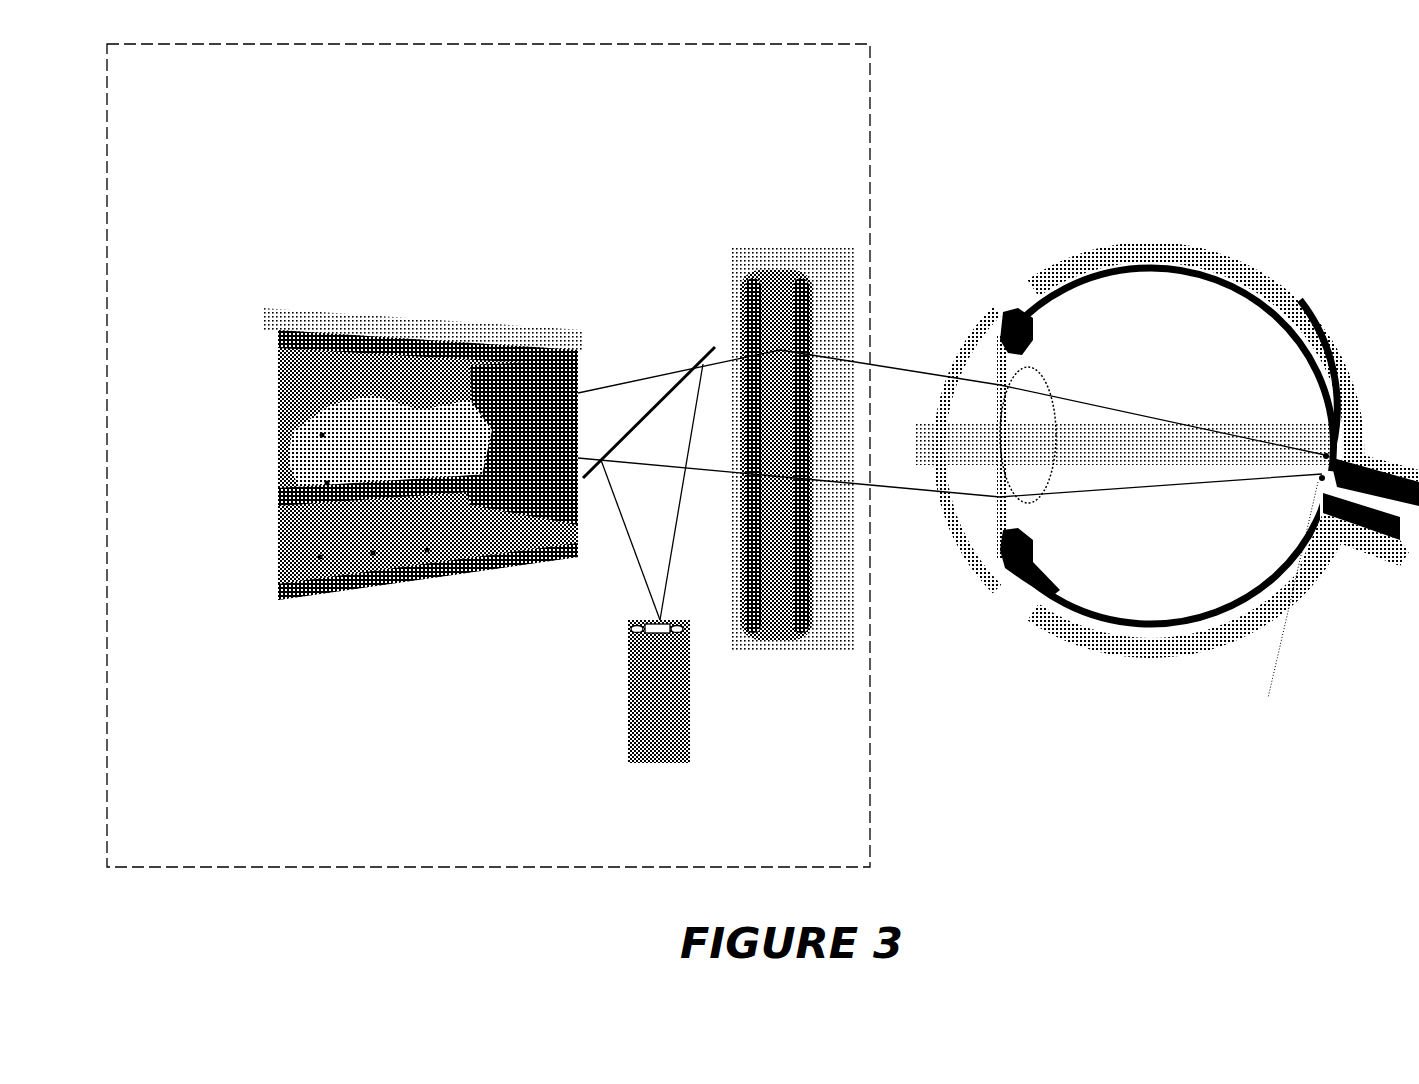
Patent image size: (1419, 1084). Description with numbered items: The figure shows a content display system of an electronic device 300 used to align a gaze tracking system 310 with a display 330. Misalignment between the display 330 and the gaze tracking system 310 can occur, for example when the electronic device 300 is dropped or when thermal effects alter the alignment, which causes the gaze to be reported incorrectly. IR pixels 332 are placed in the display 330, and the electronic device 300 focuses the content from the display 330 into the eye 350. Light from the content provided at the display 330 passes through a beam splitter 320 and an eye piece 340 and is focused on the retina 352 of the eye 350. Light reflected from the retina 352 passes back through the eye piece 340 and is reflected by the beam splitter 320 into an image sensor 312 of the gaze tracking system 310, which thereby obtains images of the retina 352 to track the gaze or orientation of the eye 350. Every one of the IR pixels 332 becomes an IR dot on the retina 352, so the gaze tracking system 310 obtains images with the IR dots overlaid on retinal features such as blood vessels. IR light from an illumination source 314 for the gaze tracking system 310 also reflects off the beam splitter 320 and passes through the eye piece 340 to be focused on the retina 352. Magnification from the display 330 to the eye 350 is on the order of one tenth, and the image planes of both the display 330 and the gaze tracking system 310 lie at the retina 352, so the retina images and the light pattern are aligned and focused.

The electronic device 300 is at (842, 103).
The gaze tracking system 310 is at (683, 716).
The image sensor 312 is at (667, 620).
The illumination source 314 is at (675, 638).
The beam splitter 320 is at (712, 348).
The display 330 is at (400, 340).
The IR pixels 332 is at (322, 435).
The eye piece 340 is at (802, 272).
The eye 350 is at (1193, 243).
The retina 352 is at (1293, 356).